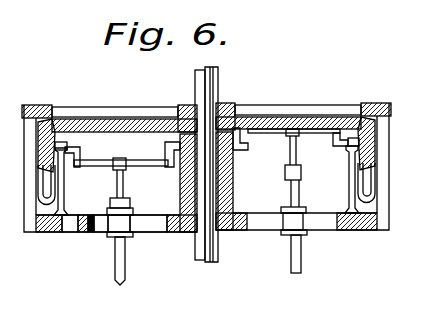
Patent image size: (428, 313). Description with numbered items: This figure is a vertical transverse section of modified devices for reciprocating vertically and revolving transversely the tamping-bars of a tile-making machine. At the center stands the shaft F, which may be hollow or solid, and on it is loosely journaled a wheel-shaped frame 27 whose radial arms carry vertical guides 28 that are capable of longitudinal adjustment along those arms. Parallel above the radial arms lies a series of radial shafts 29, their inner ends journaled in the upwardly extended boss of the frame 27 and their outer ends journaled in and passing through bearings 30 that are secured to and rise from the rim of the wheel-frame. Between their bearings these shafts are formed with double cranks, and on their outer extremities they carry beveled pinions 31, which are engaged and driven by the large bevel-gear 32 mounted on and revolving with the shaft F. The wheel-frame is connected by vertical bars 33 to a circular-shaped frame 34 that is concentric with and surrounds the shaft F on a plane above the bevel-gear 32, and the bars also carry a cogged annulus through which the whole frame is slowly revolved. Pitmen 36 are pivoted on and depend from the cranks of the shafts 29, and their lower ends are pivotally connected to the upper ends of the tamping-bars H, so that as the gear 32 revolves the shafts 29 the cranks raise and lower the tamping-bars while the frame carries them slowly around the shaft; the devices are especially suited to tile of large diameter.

The shaft F is at (218, 88).
The tamping-bars H is at (118, 271).
The wheel-shaped frame 27 is at (166, 232).
The vertical guides 28 is at (129, 212).
The radial shafts 29 is at (166, 158).
The bearings 30 is at (71, 148).
The beveled pinions 31 is at (207, 184).
The bevel-gear 32 is at (134, 125).
The vertical bars 33 is at (31, 202).
The circular-shaped frame 34 is at (80, 112).
The pitmen 36 is at (117, 183).